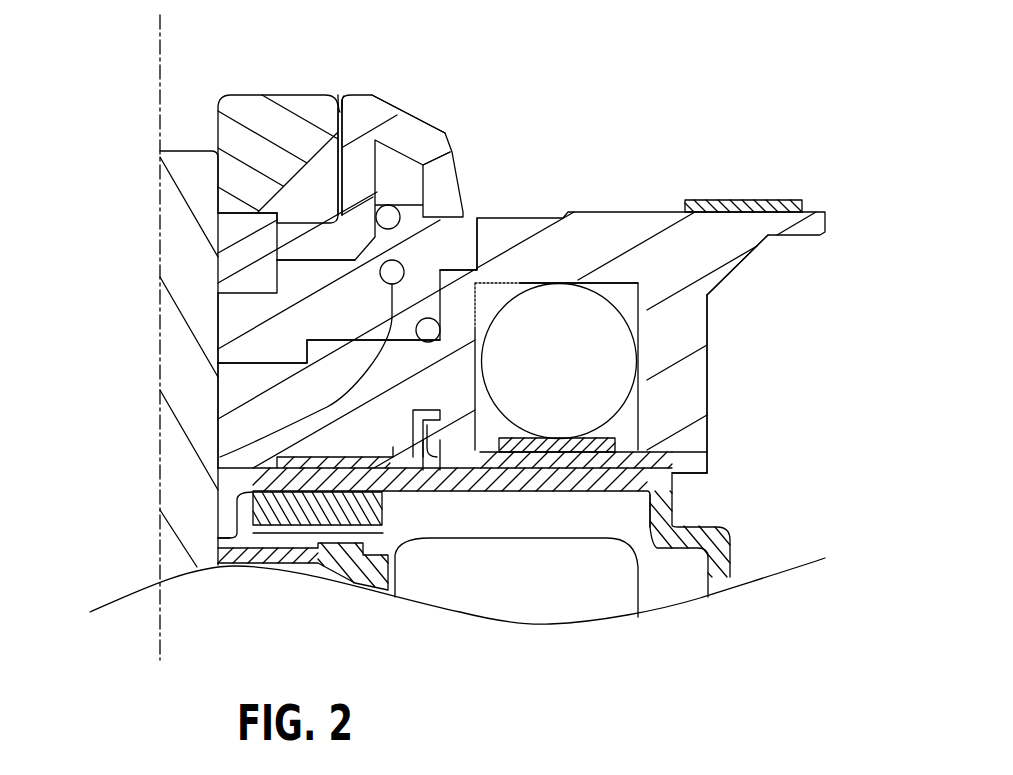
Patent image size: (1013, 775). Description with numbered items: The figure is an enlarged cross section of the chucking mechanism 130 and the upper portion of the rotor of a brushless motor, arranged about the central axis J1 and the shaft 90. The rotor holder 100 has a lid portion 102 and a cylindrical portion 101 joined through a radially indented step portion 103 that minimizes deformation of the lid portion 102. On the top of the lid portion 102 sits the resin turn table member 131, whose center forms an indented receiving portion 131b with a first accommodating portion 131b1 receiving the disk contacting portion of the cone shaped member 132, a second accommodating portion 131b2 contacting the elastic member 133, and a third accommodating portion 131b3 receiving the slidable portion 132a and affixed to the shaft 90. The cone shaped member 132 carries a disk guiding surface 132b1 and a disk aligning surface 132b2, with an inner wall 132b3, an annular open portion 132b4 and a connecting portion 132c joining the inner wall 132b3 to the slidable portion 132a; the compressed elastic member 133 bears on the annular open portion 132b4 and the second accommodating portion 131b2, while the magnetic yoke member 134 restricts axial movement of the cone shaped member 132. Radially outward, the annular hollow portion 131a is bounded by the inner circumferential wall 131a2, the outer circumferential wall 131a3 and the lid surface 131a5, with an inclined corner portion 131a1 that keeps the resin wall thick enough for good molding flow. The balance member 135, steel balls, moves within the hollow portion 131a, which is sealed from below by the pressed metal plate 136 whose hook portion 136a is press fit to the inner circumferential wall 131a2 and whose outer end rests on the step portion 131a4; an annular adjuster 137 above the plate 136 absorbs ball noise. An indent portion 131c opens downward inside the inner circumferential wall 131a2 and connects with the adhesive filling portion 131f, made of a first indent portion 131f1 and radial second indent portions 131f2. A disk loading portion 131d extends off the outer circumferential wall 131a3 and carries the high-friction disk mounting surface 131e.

The central axis J1 is at (158, 53).
The shaft 90 is at (197, 520).
The rotor holder 100 is at (762, 553).
The cylindrical portion 101 is at (720, 570).
The lid portion 102 is at (540, 483).
The step portion 103 is at (663, 530).
The chucking mechanism 130 is at (350, 78).
The turn table member 131 is at (729, 110).
The hollow portion 131a is at (687, 380).
The corner portion 131a1 is at (492, 300).
The inner circumferential wall 131a2 is at (423, 458).
The outer circumferential wall 131a3 is at (687, 440).
The step portion 131a4 is at (707, 457).
The lid surface 131a5 is at (637, 280).
The indented receiving portion 131b is at (373, 333).
The first accommodating portion 131b1 is at (458, 272).
The second accommodating portion 131b2 is at (267, 360).
The third accommodating portion 131b3 is at (316, 306).
The indent portion 131c is at (397, 480).
The disk loading portion 131d is at (687, 242).
The disk mounting surface 131e is at (742, 200).
The adhesive filling portion 131f is at (337, 465).
The first indent portion 131f1 is at (235, 478).
The second indent portions 131f2 is at (347, 457).
The cone shaped member 132 is at (453, 113).
The slidable portion 132a is at (245, 245).
The disk guiding surface 132b1 is at (416, 117).
The disk aligning surface 132b2 is at (470, 165).
The inner wall 132b3 is at (362, 175).
The annular open portion 132b4 is at (373, 197).
The connecting portion 132c is at (218, 293).
The elastic member 133 is at (410, 420).
The yoke member 134 is at (238, 138).
The balance member 135 is at (560, 361).
The plate 136 is at (567, 460).
The hook portion 136a is at (440, 445).
The adjuster 137 is at (690, 440).